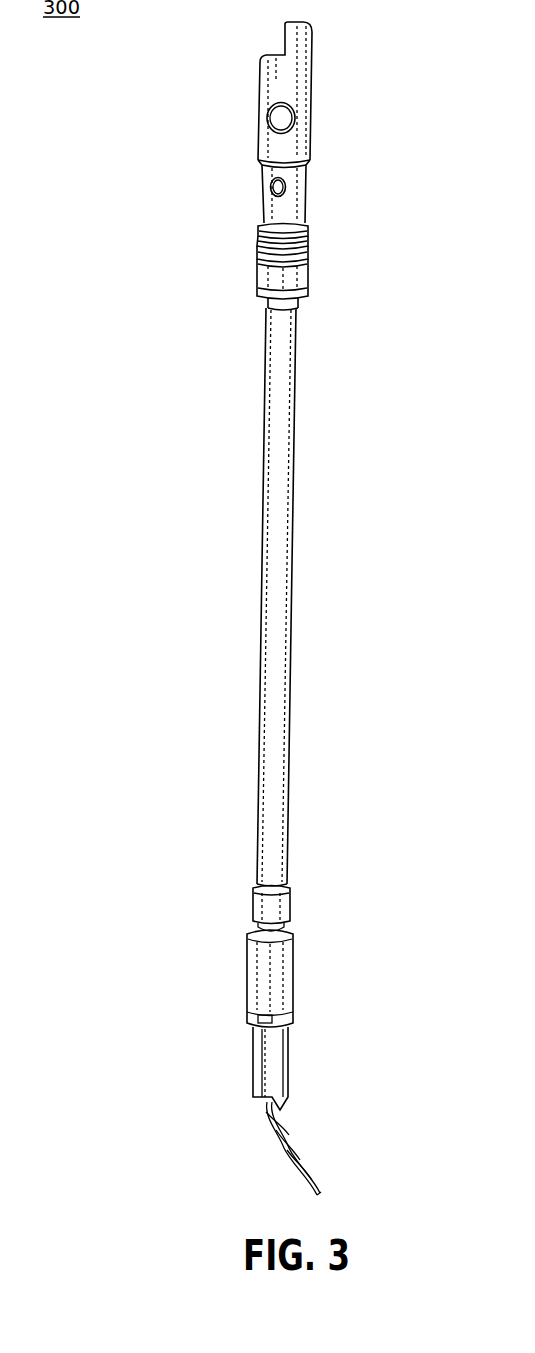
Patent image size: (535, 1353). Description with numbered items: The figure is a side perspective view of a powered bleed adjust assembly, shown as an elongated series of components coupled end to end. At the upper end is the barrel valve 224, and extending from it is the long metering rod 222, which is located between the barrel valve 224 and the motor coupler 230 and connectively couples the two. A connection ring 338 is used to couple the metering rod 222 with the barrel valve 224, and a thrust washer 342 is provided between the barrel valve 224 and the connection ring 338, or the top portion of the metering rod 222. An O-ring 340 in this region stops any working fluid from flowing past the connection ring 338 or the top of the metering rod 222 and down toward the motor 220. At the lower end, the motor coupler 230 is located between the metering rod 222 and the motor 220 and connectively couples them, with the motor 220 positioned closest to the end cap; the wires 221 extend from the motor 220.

The barrel valve 224 is at (300, 90).
The thrust washer 342 is at (306, 237).
The O-ring 340 is at (262, 256).
The connection ring 338 is at (260, 282).
The metering rod 222 is at (290, 434).
The motor coupler 230 is at (278, 982).
The motor 220 is at (270, 1052).
The tip wire 221 is at (317, 1183).